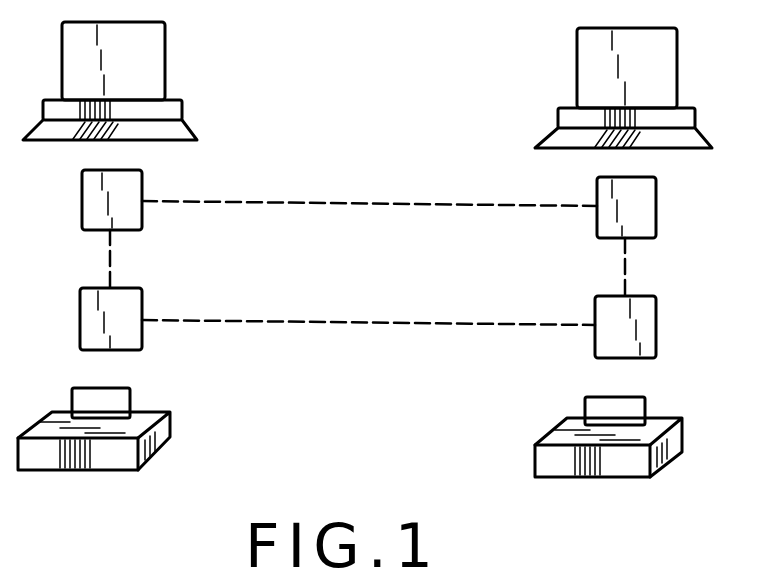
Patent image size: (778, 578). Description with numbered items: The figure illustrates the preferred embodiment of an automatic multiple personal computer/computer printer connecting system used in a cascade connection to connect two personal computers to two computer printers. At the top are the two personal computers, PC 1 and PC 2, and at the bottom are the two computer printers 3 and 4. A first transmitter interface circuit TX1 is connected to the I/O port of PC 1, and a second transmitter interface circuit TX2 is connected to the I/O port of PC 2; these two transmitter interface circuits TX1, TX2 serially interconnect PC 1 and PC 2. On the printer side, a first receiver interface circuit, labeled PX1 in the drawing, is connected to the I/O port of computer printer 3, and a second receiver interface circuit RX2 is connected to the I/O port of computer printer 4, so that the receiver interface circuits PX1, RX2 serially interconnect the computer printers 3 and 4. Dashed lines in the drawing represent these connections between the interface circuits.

The PC 1 is at (153, 58).
The PC 2 is at (668, 63).
The computer printer 3 is at (170, 425).
The computer printer 4 is at (547, 433).
The first transmitter interface circuit TX1 is at (137, 178).
The first receiver PX1 is at (122, 350).
The second transmitter interface circuit TX2 is at (650, 200).
The second receiver interface circuit RX2 is at (645, 328).